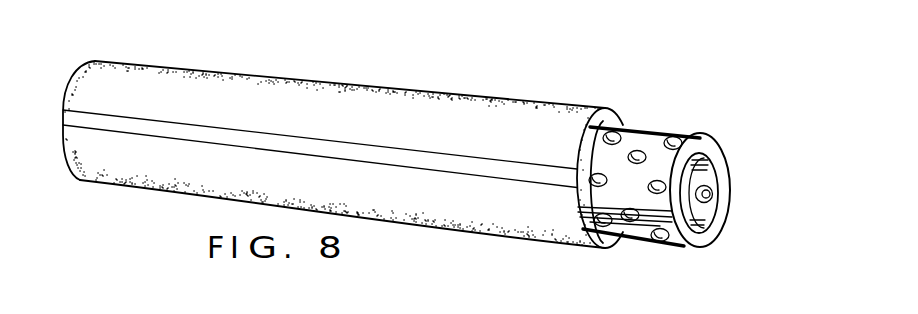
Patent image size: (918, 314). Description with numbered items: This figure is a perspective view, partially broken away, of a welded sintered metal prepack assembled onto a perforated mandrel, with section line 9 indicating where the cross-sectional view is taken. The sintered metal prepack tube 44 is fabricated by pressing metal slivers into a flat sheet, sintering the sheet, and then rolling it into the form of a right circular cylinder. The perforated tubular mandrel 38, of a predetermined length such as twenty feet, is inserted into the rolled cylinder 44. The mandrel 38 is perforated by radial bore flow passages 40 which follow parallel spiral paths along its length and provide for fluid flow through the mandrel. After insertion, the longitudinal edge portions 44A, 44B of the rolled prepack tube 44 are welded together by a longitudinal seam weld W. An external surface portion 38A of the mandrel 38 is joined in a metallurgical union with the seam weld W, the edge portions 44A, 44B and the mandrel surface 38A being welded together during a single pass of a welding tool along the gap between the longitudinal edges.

The sintered metal prepack tube 44 is at (286, 78).
The longitudinal edge portion 44A is at (565, 165).
The longitudinal edge portion 44B is at (563, 177).
The longitudinal seam weld W is at (452, 162).
The perforated tubular mandrel 38 is at (650, 130).
The external surface portion of the mandrel 38A is at (595, 250).
The radial bore flow passages 40 is at (712, 197).
The section line 9- 9 is at (497, 70).